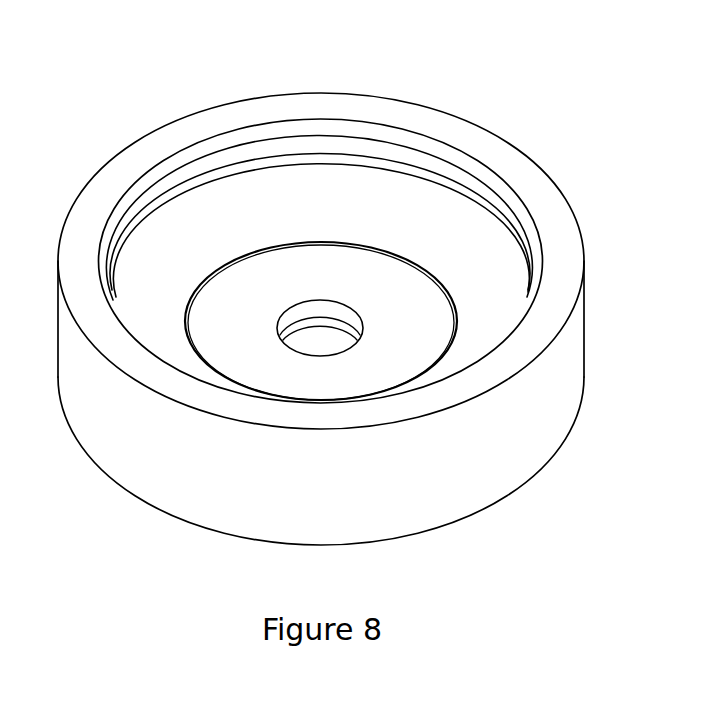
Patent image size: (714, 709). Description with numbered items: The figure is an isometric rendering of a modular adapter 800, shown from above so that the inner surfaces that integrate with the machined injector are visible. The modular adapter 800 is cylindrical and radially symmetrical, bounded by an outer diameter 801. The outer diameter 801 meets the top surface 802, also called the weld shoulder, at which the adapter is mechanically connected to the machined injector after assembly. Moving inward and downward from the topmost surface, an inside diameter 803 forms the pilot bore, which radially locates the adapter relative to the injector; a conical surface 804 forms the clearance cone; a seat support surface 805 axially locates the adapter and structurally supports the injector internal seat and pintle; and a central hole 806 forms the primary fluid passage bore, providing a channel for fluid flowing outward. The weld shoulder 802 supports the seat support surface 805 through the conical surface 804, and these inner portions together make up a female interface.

The modular adapter 800 is at (83, 117).
The outer diameter 801 is at (333, 495).
The top surface (weld shoulder) 802 is at (218, 403).
The inside diameter (pilot bore) 803 is at (337, 150).
The conical surface (clearance cone) 804 is at (333, 217).
The seat support surface 805 is at (333, 288).
The central hole (primary fluid passage bore) 806 is at (320, 340).